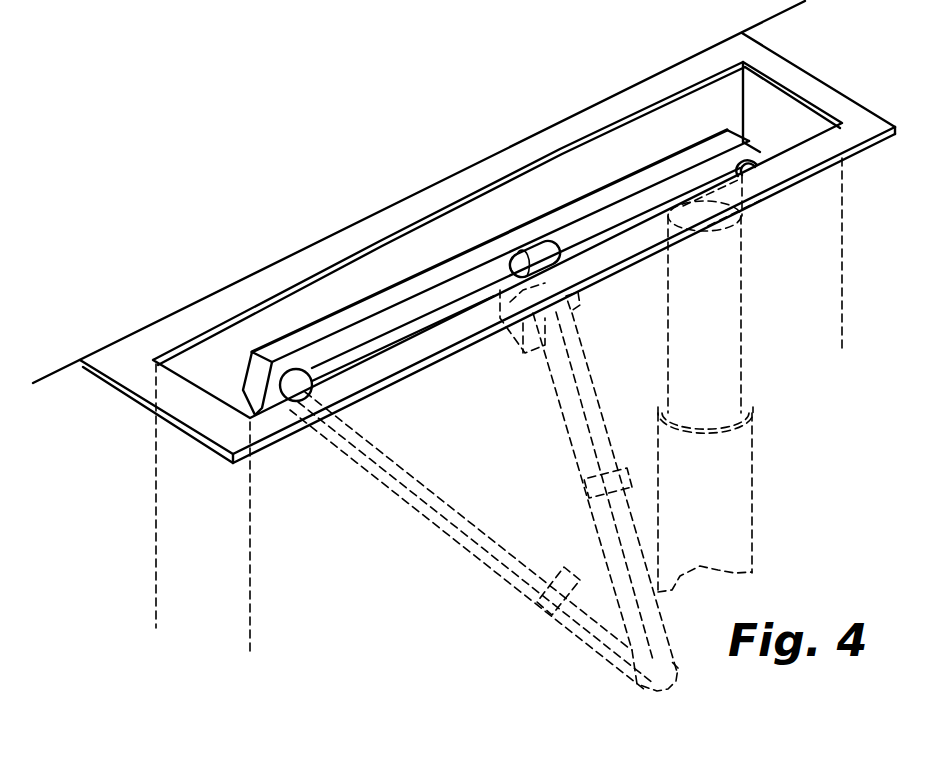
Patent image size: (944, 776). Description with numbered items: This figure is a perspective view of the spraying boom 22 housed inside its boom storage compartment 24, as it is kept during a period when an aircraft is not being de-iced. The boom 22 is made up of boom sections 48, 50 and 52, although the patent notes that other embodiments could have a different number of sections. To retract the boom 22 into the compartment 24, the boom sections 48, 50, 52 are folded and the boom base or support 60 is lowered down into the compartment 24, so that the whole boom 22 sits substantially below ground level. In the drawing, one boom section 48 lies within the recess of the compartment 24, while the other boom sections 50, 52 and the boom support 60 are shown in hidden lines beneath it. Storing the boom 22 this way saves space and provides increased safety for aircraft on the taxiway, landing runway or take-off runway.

The boom 22 is at (428, 580).
The compartment 24 is at (592, 128).
The boom section 48 is at (345, 320).
The boom section 50 is at (393, 503).
The boom section 52 is at (577, 444).
The boom base or support 60 is at (705, 378).